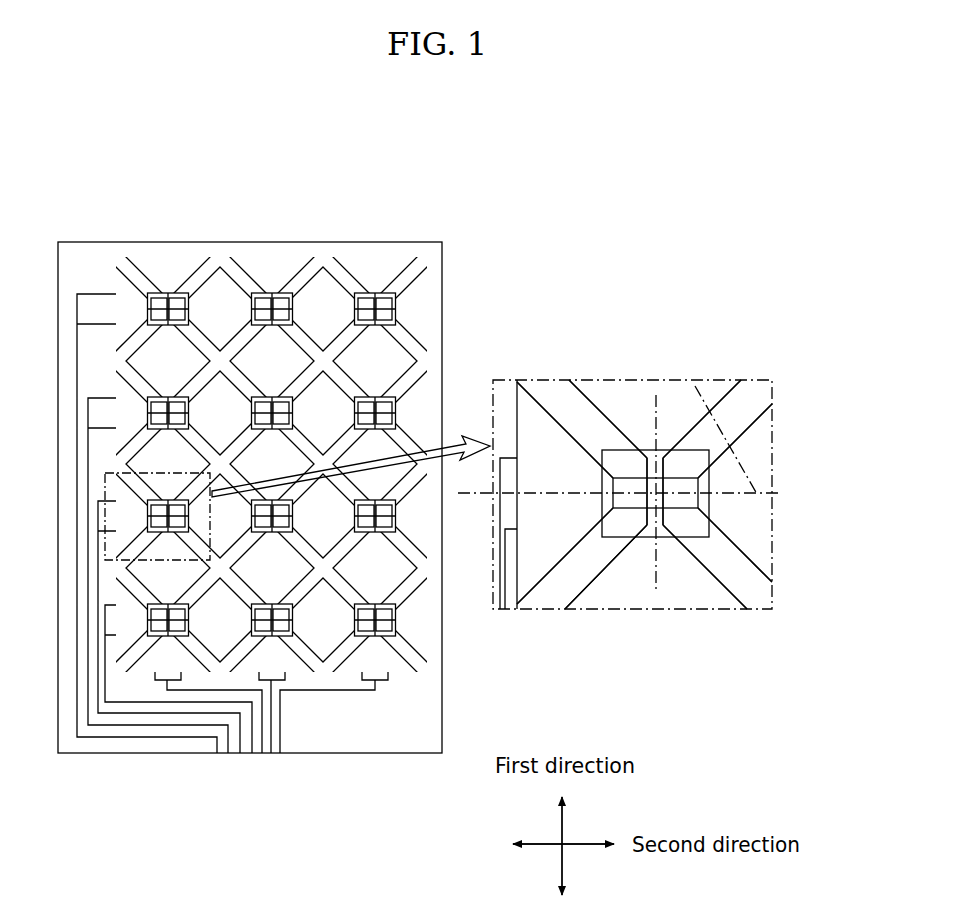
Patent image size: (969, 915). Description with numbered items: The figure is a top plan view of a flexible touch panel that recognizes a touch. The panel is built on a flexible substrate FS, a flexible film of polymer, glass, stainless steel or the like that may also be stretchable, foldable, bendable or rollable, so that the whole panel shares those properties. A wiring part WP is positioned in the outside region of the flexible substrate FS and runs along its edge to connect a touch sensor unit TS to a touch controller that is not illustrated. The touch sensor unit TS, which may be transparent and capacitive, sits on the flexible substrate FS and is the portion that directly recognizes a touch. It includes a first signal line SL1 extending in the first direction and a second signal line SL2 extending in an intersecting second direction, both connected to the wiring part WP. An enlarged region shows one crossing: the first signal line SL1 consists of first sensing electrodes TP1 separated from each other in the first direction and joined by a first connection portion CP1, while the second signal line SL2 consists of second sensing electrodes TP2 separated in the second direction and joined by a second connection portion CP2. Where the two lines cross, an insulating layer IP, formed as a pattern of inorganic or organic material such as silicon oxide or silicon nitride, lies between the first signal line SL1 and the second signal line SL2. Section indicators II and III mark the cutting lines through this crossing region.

The flexible substrate FS is at (433, 252).
The touch sensor unit TS is at (447, 464).
The first signal line SL1 is at (382, 345).
The second signal line SL2 is at (422, 392).
The wiring part WP is at (88, 302).
The first sensing electrode TP1 is at (660, 390).
The second sensing electrode TP2 is at (535, 425).
The first connection portion CP1 is at (663, 470).
The second connection portion CP2 is at (700, 515).
The insulating layer IP is at (693, 540).
The section line II- II is at (702, 391).
The section line III- III is at (654, 405).